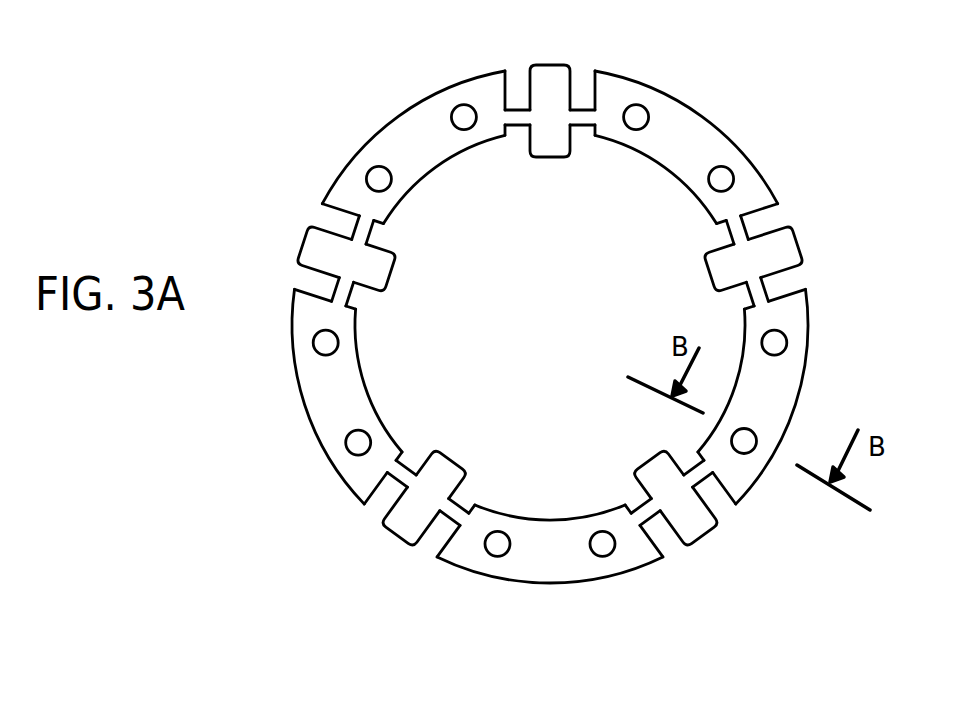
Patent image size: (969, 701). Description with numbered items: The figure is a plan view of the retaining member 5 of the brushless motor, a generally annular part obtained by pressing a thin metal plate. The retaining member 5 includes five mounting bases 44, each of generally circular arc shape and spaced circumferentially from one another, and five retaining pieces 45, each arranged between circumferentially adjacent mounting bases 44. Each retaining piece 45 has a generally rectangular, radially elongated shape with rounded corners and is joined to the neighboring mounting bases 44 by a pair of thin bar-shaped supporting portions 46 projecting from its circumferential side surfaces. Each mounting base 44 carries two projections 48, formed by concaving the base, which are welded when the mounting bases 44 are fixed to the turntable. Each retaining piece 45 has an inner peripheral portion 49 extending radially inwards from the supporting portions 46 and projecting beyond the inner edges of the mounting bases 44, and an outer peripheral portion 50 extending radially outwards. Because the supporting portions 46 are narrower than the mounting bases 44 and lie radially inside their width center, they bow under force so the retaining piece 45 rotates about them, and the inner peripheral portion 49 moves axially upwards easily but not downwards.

The retaining member 5 is at (714, 82).
The mounting base 44 is at (405, 126).
The retaining piece 45 is at (553, 306).
The supporting portion 46 is at (517, 132).
The projection 48 is at (466, 114).
The inner peripheral portion 49 is at (392, 273).
The outer peripheral portion 50 is at (312, 236).